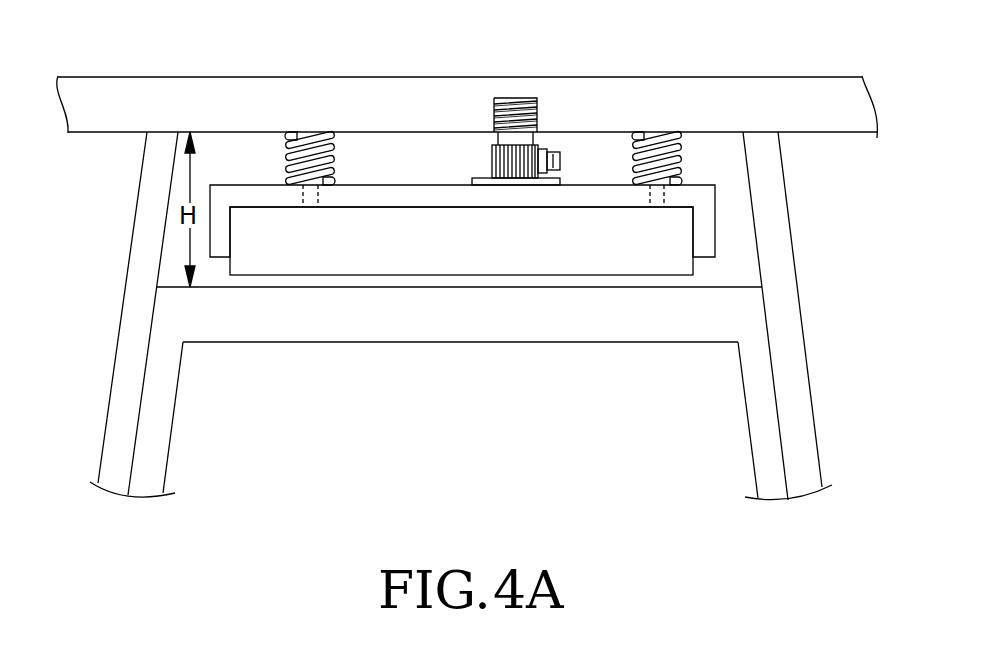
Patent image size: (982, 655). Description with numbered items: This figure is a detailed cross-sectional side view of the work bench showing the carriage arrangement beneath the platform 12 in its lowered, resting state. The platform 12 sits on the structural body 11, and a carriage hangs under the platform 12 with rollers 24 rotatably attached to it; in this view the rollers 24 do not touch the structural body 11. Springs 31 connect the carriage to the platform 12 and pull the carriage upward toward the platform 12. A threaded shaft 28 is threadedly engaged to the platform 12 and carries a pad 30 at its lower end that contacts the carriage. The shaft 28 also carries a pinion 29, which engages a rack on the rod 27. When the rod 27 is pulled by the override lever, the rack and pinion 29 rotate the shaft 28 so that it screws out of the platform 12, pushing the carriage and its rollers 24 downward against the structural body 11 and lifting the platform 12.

The structural body 11 is at (642, 321).
The platform 12 is at (648, 105).
The rollers 24 is at (562, 252).
The rod 27 is at (560, 161).
The threaded shaft 28 is at (521, 97).
The pinion 29 is at (491, 160).
The pad 30 is at (513, 188).
The springs 31 is at (335, 157).